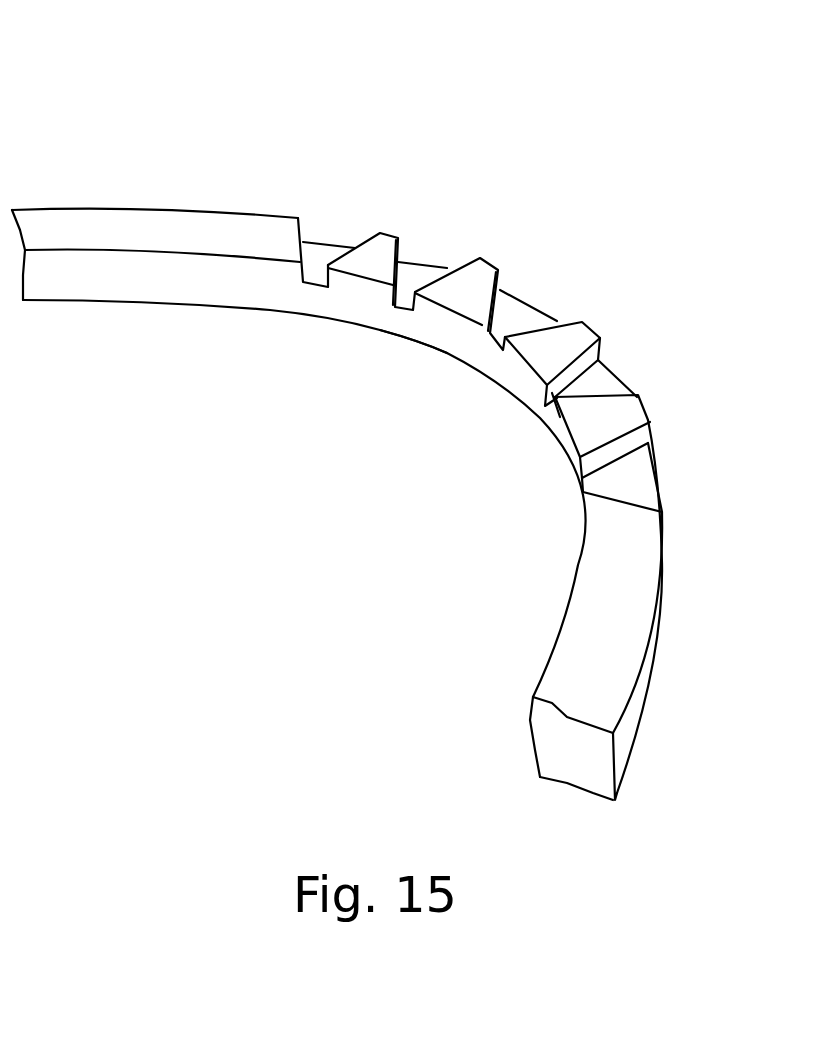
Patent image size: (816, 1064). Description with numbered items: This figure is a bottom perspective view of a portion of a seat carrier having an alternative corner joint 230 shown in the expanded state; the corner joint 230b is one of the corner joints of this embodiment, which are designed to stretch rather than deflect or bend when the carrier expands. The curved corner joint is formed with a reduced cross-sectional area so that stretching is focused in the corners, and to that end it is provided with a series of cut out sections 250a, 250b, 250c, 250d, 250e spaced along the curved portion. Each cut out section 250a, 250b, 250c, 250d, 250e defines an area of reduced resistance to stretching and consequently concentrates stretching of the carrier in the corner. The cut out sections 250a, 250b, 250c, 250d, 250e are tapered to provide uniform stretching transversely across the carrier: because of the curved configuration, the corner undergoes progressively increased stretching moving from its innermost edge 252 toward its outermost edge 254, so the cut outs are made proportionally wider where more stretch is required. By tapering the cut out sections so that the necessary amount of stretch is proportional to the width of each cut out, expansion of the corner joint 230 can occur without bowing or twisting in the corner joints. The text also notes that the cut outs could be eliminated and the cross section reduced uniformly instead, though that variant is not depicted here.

The corner joint 230 is at (525, 145).
The corner joint 230b is at (553, 322).
The cut out section 250a is at (315, 255).
The cut out section 250b is at (418, 273).
The cut out section 250c is at (515, 320).
The cut out section 250d is at (600, 385).
The cut out section 250e is at (637, 483).
The innermost edge 252 is at (445, 332).
The outermost edge 254 is at (450, 268).